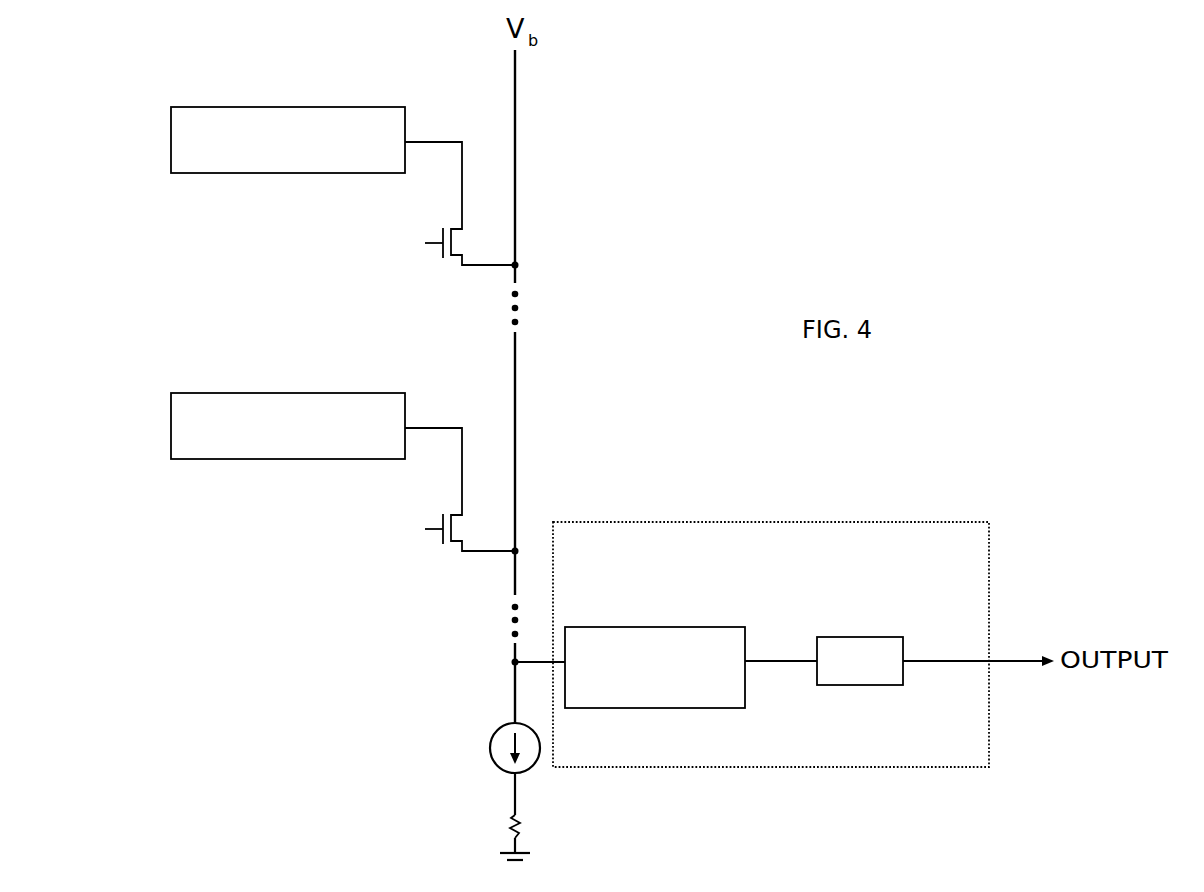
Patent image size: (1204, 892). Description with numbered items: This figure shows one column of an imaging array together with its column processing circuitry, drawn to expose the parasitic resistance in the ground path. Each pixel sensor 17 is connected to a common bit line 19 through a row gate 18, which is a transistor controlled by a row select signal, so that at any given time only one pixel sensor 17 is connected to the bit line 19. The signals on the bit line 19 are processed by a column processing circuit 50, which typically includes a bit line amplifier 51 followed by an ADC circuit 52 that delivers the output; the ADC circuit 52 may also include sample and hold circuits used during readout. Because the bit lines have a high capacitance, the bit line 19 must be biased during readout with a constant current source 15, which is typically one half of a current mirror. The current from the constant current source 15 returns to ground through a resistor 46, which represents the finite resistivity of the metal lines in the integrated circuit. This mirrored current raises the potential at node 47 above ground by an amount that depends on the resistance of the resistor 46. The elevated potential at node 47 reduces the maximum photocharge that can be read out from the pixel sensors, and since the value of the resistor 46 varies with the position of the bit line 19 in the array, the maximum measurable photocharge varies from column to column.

The constant current source 15 is at (494, 750).
The pixel sensor 17 is at (237, 174).
The row gate 18 is at (451, 243).
The bit line 19 is at (511, 677).
The resistor 46 is at (526, 828).
The node 47 is at (513, 806).
The column processing circuit 50 is at (823, 527).
The bit line amplifier 51 is at (674, 627).
The ADC circuit 52 is at (856, 640).